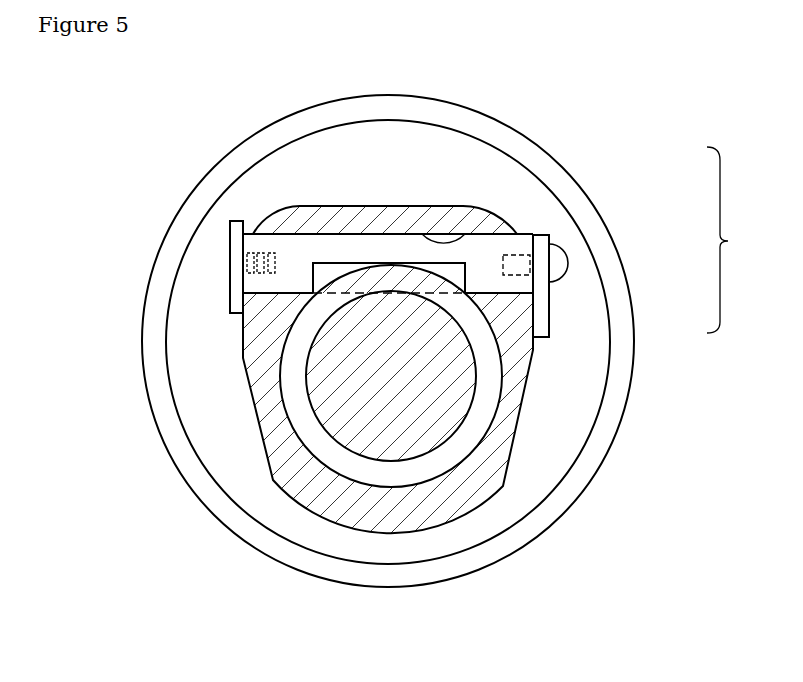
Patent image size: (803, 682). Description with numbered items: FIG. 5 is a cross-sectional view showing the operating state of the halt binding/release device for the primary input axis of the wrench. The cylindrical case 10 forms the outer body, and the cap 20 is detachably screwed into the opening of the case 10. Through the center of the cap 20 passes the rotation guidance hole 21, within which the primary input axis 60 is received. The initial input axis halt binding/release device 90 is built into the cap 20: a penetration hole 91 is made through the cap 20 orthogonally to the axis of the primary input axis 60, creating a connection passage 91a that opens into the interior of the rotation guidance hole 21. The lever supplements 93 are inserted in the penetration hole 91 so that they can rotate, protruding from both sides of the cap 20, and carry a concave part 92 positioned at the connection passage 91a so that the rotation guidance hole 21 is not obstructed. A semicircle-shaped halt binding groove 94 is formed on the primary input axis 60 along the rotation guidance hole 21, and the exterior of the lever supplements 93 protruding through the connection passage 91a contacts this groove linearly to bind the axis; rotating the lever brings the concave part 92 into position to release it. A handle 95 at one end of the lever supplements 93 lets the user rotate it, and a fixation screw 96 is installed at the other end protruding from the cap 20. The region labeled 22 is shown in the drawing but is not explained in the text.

The cylindrical case 10 is at (552, 540).
The cap 20 is at (478, 556).
The rotation guidance hole 21 is at (282, 388).
The hatched bearing portion 22 is at (513, 410).
The primary input axis 60 is at (385, 418).
The initial input axis halt binding/release device 90 is at (736, 240).
The penetration hole 91 is at (467, 275).
The connection passage 91a is at (367, 280).
The concave part 92 is at (445, 238).
The lever supplements 93 is at (522, 246).
The halt binding groove 94 is at (483, 375).
The handle 95 is at (550, 318).
The fixation screw 96 is at (236, 258).